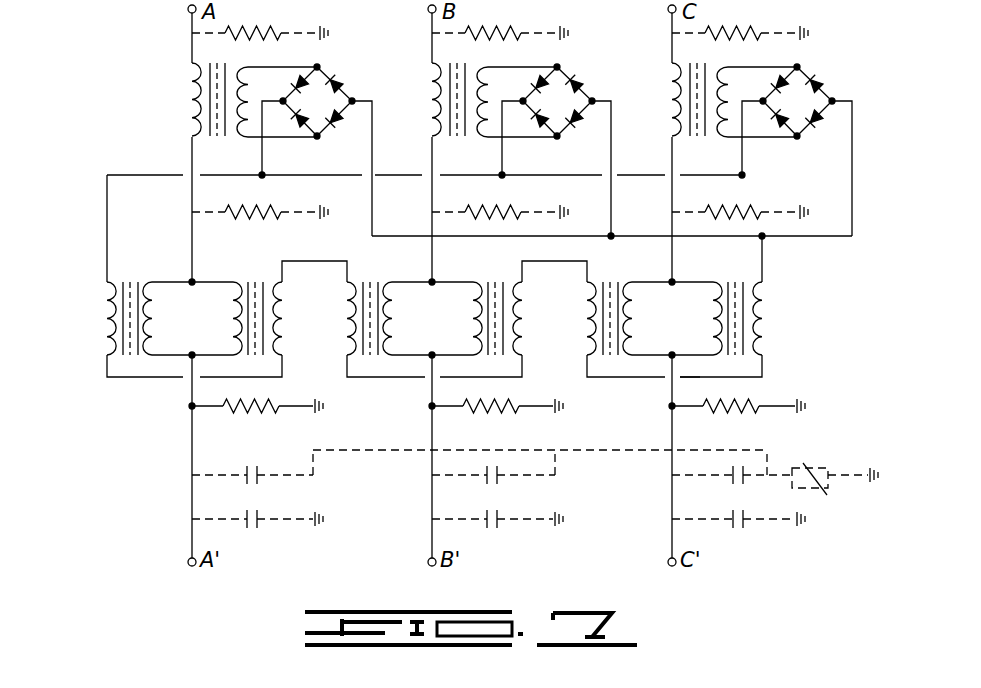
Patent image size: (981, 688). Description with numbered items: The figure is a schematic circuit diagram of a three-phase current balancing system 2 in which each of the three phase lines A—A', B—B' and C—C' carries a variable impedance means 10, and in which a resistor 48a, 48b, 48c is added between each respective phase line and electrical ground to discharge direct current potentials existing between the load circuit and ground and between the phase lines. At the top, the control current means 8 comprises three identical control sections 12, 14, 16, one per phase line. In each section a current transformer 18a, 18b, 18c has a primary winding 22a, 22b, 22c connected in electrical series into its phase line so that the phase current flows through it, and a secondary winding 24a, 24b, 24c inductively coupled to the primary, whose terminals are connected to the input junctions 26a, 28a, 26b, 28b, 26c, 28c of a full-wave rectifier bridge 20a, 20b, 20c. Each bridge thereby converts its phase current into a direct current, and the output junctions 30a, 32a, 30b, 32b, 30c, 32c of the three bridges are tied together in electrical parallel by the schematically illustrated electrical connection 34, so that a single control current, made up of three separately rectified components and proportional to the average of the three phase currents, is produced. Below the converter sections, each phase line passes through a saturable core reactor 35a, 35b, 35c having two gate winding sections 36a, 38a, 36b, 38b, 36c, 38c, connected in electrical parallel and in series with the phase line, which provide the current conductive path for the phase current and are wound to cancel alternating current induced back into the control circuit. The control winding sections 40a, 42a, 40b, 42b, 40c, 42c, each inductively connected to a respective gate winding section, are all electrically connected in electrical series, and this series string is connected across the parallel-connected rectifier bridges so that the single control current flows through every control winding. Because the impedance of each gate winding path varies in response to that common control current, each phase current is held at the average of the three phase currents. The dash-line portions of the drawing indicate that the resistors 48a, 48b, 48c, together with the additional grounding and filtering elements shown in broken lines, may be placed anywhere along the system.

The power conversion circuit 2 is at (792, 363).
The control current means 8 is at (450, 98).
The variable impedance means 10 is at (149, 276).
The control section 12 is at (282, 57).
The control section 14 is at (522, 57).
The control section 16 is at (762, 57).
The current transformer 18a is at (226, 49).
The current transformer 18b is at (466, 49).
The current transformer 18c is at (706, 49).
The full-wave rectifier bridge 20a is at (346, 103).
The full-wave rectifier bridge 20b is at (586, 103).
The full-wave rectifier bridge 20c is at (825, 103).
The primary winding 22a is at (190, 84).
The primary winding 22b is at (430, 101).
The primary winding 22c is at (671, 118).
The secondary winding 24a is at (277, 102).
The secondary winding 24b is at (517, 102).
The secondary winding 24c is at (757, 102).
The input junction 26a is at (322, 60).
The input junction 26b is at (562, 60).
The input junction 26c is at (802, 60).
The input junction 28a is at (314, 138).
The input junction 28b is at (554, 138).
The input junction 28c is at (794, 138).
The output junction 30a is at (282, 104).
The output junction 30b is at (522, 104).
The output junction 30c is at (762, 104).
The output junction 32a is at (356, 100).
The output junction 32b is at (596, 100).
The output junction 32c is at (836, 100).
The electrical connection 34 is at (259, 178).
The saturable core reactor 35a is at (208, 280).
The saturable core reactor 35b is at (448, 280).
The saturable core reactor 35c is at (688, 280).
The gate winding section 36a is at (159, 297).
The gate winding section 36b is at (399, 297).
The gate winding section 36c is at (639, 297).
The gate winding section 38a is at (228, 320).
The gate winding section 38b is at (468, 320).
The gate winding section 38c is at (708, 320).
The control winding section 40a is at (105, 298).
The control winding section 40b is at (343, 320).
The control winding section 40c is at (583, 320).
The control winding section 42a is at (288, 300).
The control winding section 42b is at (528, 300).
The control winding section 42c is at (764, 300).
The resistor 48a is at (226, 410).
The resistor 48b is at (466, 410).
The resistor 48c is at (706, 410).